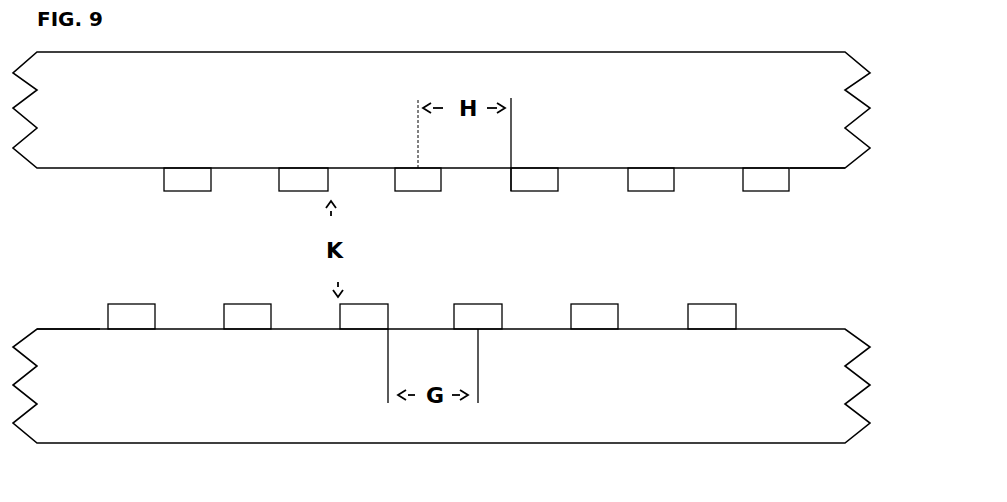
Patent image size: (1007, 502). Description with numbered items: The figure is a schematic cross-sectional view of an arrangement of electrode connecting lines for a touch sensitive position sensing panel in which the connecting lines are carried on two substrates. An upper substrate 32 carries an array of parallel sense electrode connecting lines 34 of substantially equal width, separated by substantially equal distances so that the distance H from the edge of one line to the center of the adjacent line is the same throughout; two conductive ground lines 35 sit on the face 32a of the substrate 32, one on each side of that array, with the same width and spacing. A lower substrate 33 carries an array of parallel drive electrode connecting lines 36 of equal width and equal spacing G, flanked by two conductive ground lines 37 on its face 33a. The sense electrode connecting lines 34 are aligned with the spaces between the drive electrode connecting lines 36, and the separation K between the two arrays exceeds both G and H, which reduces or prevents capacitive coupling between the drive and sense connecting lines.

The substrate 32 is at (67, 138).
The face of substrate 32 32a is at (813, 168).
The substrate 33 is at (72, 422).
The face of substrate 33 33a is at (60, 328).
The sense electrode connecting lines 34 is at (312, 192).
The conductive ground lines 35 is at (187, 192).
The drive electrode connecting lines 36 is at (257, 303).
The conductive ground lines 37 is at (143, 303).